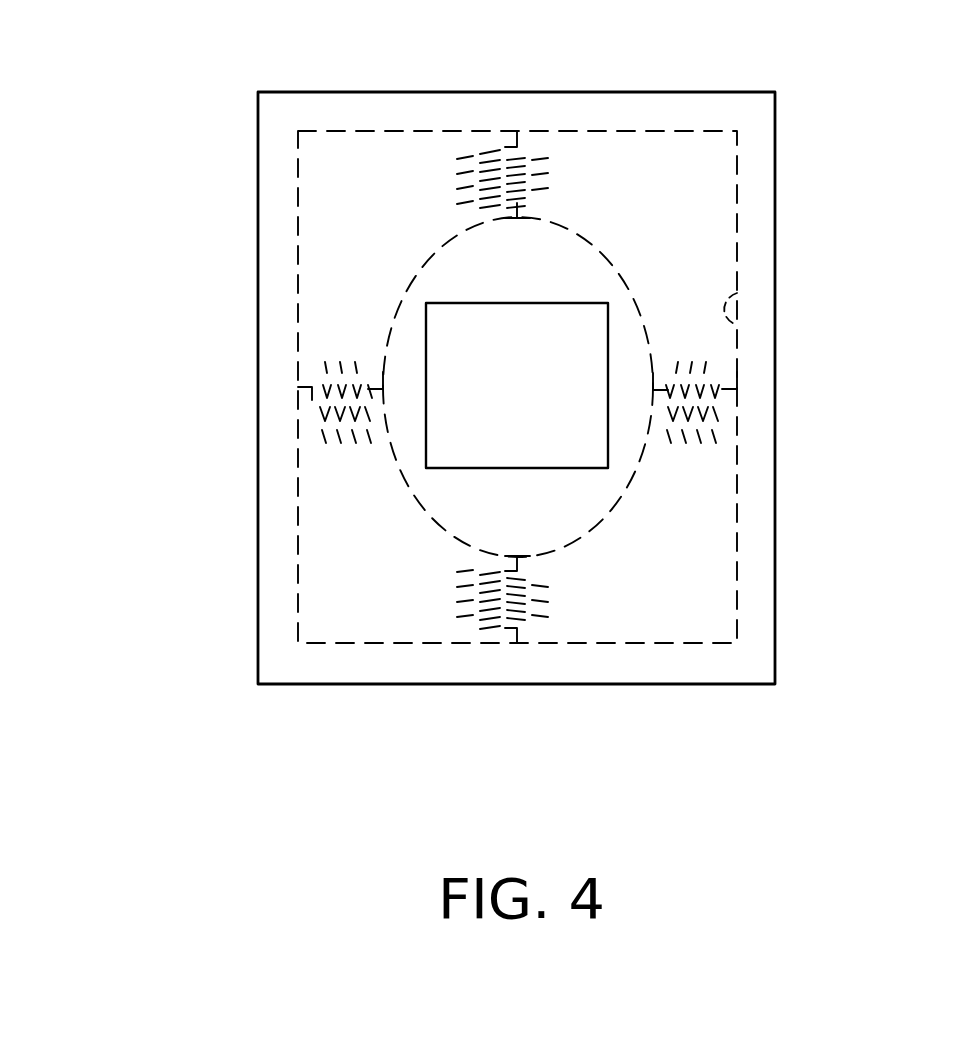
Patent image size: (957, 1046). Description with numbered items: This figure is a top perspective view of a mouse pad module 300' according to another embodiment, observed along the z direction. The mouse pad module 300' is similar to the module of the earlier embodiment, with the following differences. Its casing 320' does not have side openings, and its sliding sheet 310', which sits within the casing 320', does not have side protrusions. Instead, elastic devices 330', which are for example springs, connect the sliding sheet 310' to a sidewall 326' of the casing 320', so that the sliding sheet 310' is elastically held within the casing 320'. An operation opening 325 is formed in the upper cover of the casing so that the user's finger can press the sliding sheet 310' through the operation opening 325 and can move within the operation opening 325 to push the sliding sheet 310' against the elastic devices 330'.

The mouse pad module 300' is at (602, 452).
The sliding sheet 310' is at (642, 365).
The casing 320' is at (579, 388).
The operation opening 325 is at (482, 335).
The sidewall 326' is at (809, 317).
The elastic devices 330' is at (595, 387).